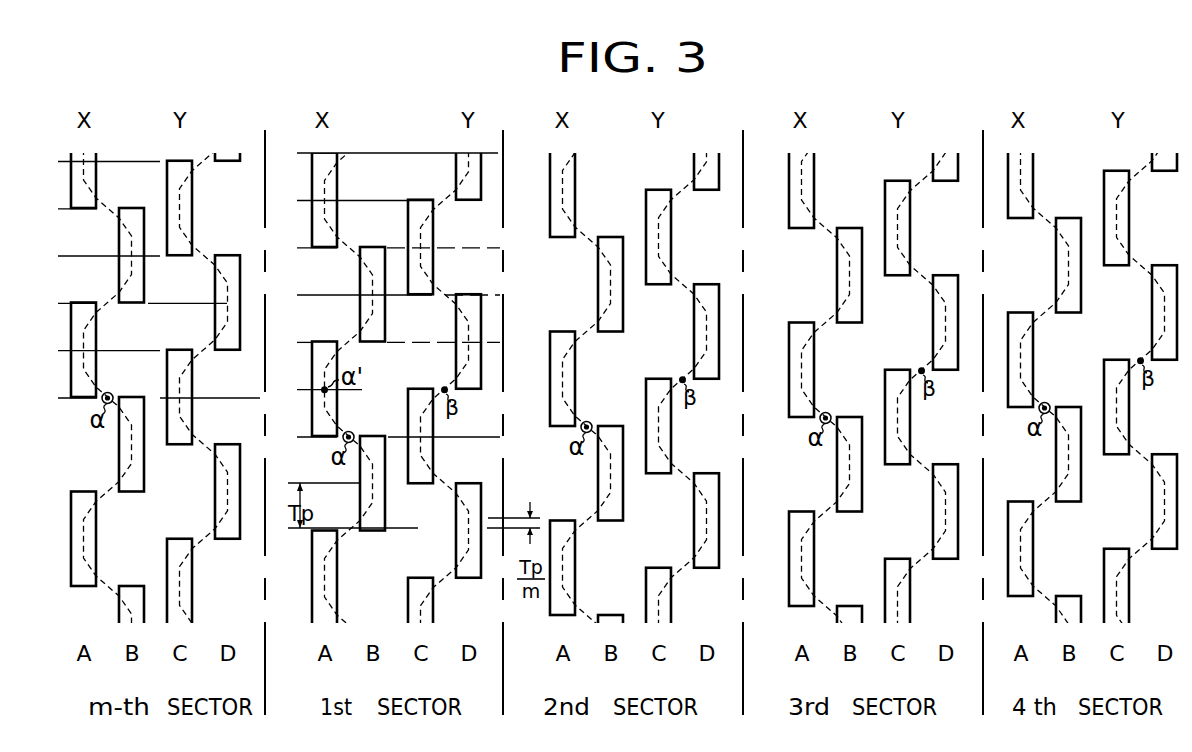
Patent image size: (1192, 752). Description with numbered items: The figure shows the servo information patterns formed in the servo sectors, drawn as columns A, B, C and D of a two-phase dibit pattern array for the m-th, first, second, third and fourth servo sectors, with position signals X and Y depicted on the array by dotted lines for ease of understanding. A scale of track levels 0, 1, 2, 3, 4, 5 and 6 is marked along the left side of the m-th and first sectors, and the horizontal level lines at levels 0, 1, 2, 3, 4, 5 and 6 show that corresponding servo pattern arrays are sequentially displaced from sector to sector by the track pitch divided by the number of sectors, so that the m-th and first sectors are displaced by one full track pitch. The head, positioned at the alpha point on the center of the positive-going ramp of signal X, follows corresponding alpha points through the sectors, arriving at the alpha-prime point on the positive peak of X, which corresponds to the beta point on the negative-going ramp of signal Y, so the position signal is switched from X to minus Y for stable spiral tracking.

The phase level 0 line 0 is at (269, 418).
The phase level 1 line 1 is at (200, 370).
The phase level 2 line 2 is at (269, 323).
The phase level 3 line 3 is at (269, 276).
The phase level 4 line 4 is at (269, 228).
The phase level 5 line 5 is at (235, 181).
The phase level 6 line 6 is at (387, 154).